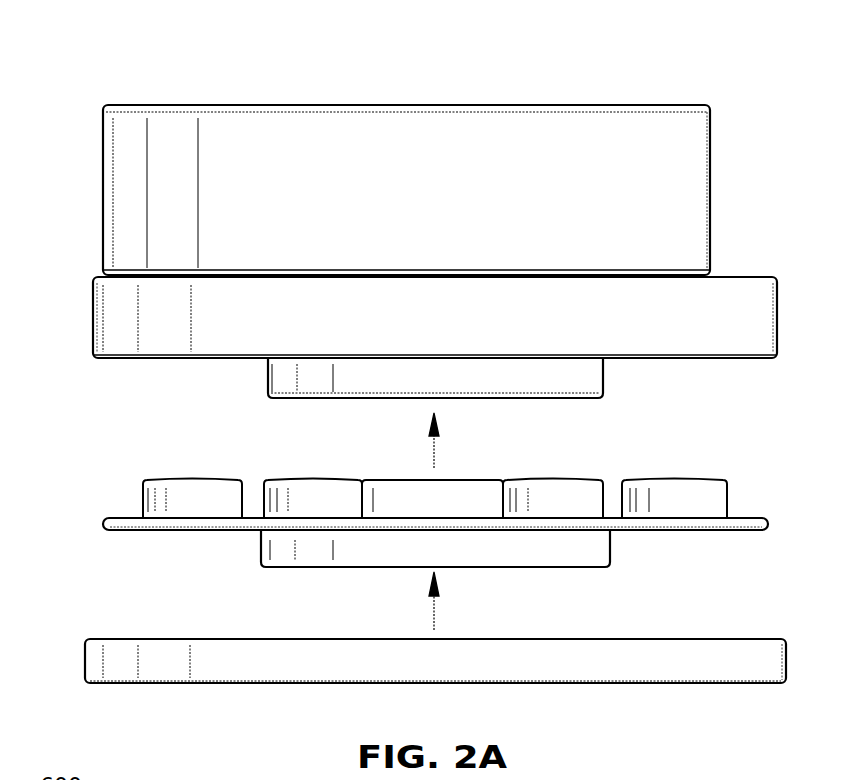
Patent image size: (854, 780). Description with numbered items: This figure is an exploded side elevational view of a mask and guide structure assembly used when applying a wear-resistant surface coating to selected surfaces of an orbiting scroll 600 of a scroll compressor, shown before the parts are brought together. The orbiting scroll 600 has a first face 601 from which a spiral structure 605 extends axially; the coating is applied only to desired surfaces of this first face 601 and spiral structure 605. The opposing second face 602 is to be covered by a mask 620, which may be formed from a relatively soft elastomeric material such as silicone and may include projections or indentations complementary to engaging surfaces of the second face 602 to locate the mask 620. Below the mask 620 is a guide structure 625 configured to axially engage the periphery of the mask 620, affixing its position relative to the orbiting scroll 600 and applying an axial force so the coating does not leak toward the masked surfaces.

The orbiting scroll 600 is at (108, 100).
The spiral structure 605 is at (428, 105).
The first face 601 is at (747, 277).
The second face 602 is at (745, 360).
The mask 620 is at (113, 518).
The guide structure 625 is at (117, 638).